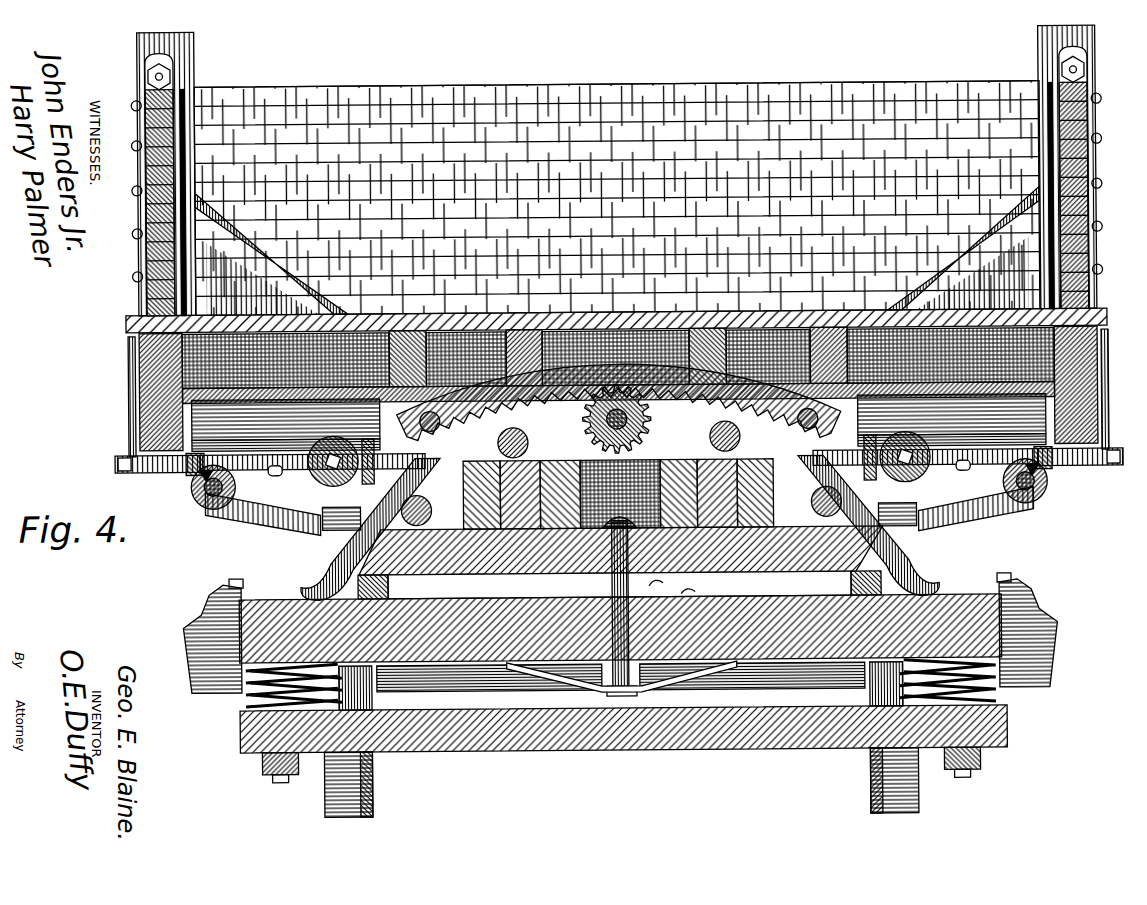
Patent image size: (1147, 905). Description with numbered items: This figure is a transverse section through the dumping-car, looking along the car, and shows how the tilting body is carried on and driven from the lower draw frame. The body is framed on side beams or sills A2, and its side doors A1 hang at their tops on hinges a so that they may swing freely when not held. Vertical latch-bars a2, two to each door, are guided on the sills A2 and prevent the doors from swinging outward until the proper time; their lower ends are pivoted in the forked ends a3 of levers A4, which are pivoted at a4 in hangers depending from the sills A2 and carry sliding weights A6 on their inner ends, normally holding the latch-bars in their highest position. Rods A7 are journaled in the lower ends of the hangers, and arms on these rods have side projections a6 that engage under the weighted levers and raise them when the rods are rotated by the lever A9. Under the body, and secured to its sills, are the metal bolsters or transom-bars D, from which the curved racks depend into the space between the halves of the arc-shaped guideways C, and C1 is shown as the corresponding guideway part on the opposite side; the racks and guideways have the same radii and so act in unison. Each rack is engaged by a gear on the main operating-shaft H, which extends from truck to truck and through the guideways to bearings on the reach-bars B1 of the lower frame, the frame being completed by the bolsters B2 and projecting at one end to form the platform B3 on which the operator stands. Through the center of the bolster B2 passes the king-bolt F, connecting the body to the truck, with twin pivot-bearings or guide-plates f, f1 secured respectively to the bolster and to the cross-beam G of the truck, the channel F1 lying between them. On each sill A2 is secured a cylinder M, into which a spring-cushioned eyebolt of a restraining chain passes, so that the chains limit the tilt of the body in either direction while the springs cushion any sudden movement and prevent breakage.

The hinges a is at (200, 56).
The doors A1 is at (147, 196).
The vertical latch-bars a2 is at (129, 392).
The side beams or sills A2 is at (618, 388).
The forked ends a3 is at (617, 464).
The levers A4 is at (623, 471).
The pivot a4 is at (619, 485).
The sliding weights A6 is at (619, 468).
The side projection a6 is at (619, 477).
The rods A7 is at (619, 496).
The lever A9 is at (619, 513).
The metal bolsters or transom-bars D is at (618, 358).
The cylinder M is at (619, 422).
The king-bolt F is at (618, 401).
The main operating-shaft H is at (622, 412).
The platform B3 is at (618, 494).
The curved or arc-shaped guideways C is at (372, 529).
The bracket C1 is at (868, 525).
The longitudinal reach-bars B1 is at (621, 550).
The channel F1 is at (619, 585).
The pivot-bearing or guide-plate f is at (659, 579).
The pivot-bearing or guide-plate f1 is at (692, 586).
The cross-beam G is at (620, 628).
The bolsters B2 is at (623, 729).